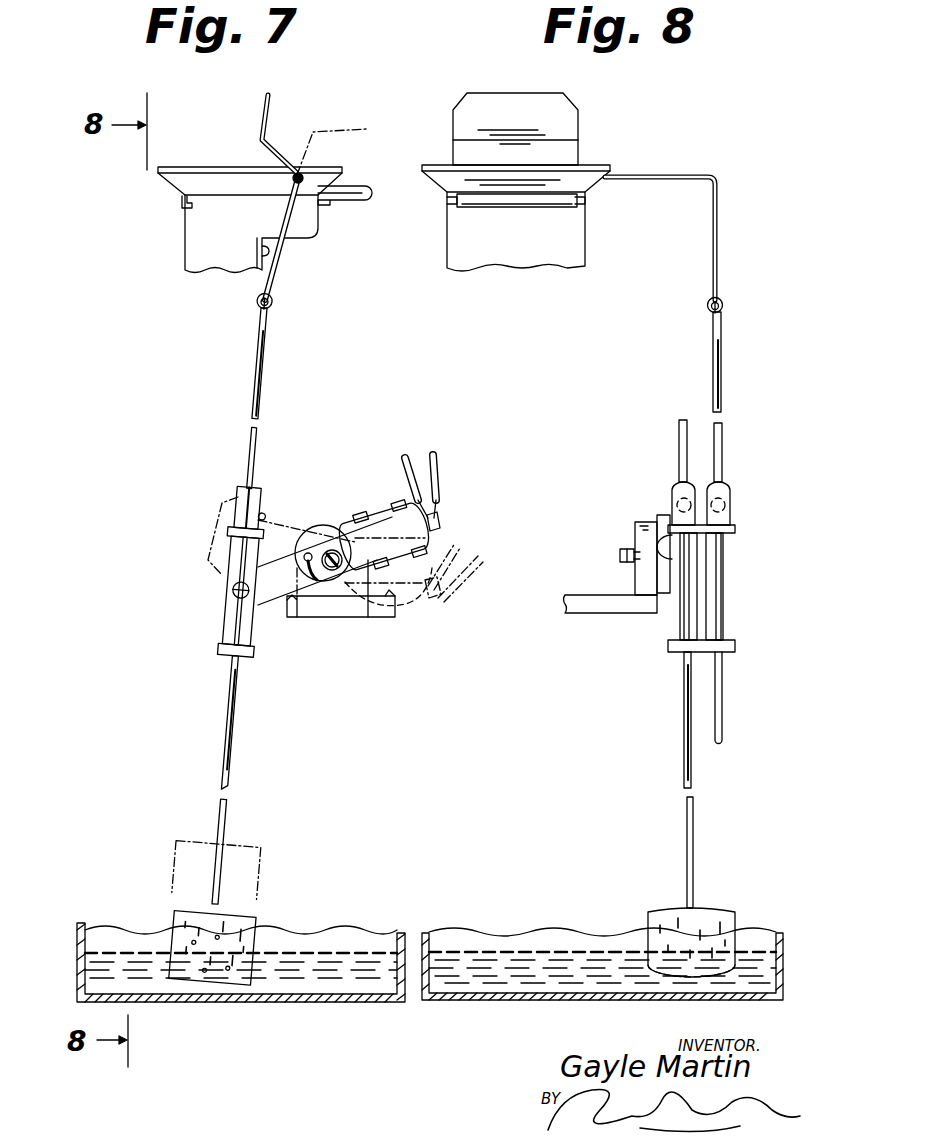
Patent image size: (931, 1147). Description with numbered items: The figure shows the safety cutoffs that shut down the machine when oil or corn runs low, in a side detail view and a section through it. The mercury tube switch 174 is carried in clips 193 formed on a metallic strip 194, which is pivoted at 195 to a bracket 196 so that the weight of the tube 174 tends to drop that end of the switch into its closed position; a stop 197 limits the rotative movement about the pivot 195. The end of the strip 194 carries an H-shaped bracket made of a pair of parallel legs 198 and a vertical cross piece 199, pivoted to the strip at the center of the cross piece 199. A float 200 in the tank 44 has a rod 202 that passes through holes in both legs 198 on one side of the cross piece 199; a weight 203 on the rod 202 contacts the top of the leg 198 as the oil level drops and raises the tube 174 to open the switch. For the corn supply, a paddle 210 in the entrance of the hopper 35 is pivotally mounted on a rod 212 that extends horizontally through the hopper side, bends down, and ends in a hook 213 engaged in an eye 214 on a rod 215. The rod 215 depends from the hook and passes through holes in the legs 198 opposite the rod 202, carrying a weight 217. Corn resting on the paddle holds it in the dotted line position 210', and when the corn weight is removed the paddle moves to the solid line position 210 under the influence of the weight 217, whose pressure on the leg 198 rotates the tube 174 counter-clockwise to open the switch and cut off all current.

In FIG. 7, the hopper 35 is at (163, 253).
In FIG. 8, the hopper 35 is at (614, 130).
In FIG. 7, the tank 44 is at (223, 1002).
In FIG. 8, the tank 44 is at (473, 1000).
In FIG. 7, the mercury tube switch 174 is at (383, 487).
In FIG. 8, the mercury tube switch 174 is at (665, 510).
In FIG. 7, the clips 193 is at (353, 533).
In FIG. 7, the metallic strip 194 is at (273, 593).
In FIG. 8, the metallic strip 194 is at (673, 593).
In FIG. 7, the pivot 195 is at (334, 570).
In FIG. 8, the pivot 195 is at (620, 555).
In FIG. 7, the bracket 196 is at (377, 612).
In FIG. 8, the bracket 196 is at (640, 578).
In FIG. 7, the stop 197 is at (307, 545).
In FIG. 7, the parallel legs 198 is at (232, 537).
In FIG. 8, the parallel legs 198 is at (735, 529).
In FIG. 7, the vertical cross piece 199 is at (232, 563).
In FIG. 8, the vertical cross piece 199 is at (732, 555).
In FIG. 7, the float 200 is at (253, 922).
In FIG. 8, the float 200 is at (673, 908).
In FIG. 7, the rod 202 is at (230, 812).
In FIG. 8, the rod 202 is at (687, 820).
In FIG. 8, the weight 203 is at (672, 483).
In FIG. 7, the paddle 210 is at (250, 133).
In FIG. 8, the paddle 210 is at (537, 118).
In FIG. 7, the dotted line position of paddle 210' is at (350, 134).
In FIG. 7, the rod 212 is at (290, 207).
In FIG. 8, the rod 212 is at (658, 175).
In FIG. 7, the hook 213 is at (277, 300).
In FIG. 8, the hook 213 is at (722, 300).
In FIG. 7, the eye 214 is at (262, 305).
In FIG. 8, the eye 214 is at (723, 310).
In FIG. 7, the rod 215 is at (260, 437).
In FIG. 8, the rod 215 is at (721, 432).
In FIG. 7, the weight 217 is at (268, 490).
In FIG. 8, the weight 217 is at (730, 490).